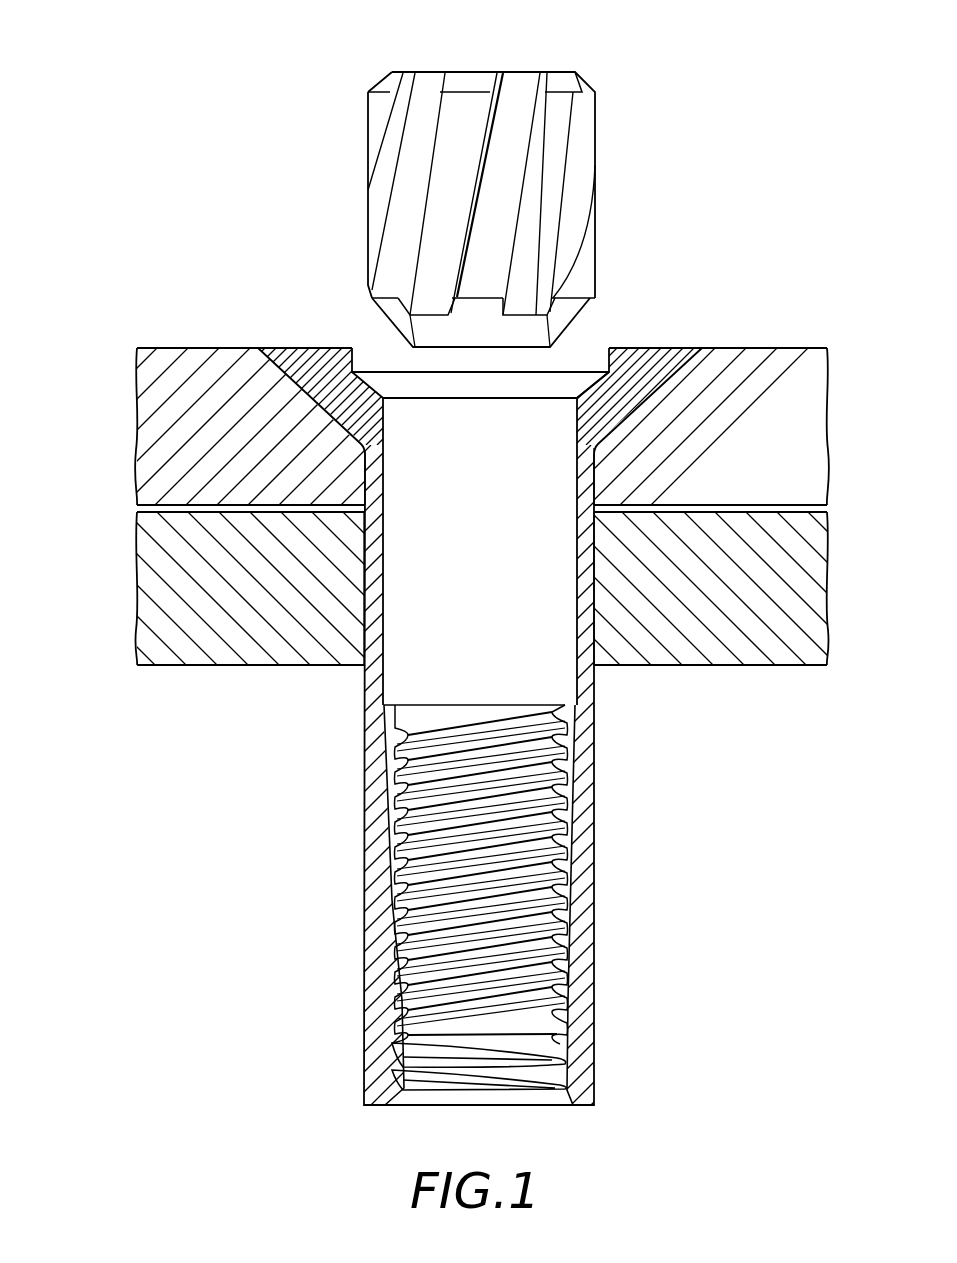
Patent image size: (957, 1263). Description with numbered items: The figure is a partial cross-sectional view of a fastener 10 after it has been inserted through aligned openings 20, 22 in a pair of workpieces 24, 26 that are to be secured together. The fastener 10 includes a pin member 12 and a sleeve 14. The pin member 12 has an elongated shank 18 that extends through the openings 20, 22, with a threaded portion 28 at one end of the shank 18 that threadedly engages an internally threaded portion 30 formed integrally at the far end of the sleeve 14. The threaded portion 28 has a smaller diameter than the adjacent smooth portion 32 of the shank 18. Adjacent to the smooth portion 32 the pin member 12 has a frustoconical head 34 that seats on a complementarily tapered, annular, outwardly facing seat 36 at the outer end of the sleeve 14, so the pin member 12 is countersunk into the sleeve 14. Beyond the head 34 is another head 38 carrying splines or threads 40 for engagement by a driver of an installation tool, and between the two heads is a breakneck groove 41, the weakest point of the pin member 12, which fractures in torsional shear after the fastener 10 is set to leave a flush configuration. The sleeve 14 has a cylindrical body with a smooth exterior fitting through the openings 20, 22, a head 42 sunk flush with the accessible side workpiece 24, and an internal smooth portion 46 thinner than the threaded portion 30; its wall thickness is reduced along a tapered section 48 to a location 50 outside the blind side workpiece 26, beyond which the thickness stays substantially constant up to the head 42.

The fastener 10 is at (674, 260).
The pin member 12 is at (596, 590).
The sleeve 14 is at (595, 888).
The elongated shank 18 is at (383, 696).
The opening 20 is at (595, 478).
The opening 22 is at (597, 565).
The workpiece 24 is at (140, 400).
The workpiece 26 is at (140, 572).
The threaded portion 28 is at (393, 862).
The internally threaded portion 30 is at (565, 1060).
The smooth portion 32 is at (490, 552).
The head 34 is at (383, 380).
The seat 36 is at (600, 380).
The head 38 is at (368, 156).
The splines or threads 40 is at (514, 72).
The breakneck groove 41 is at (558, 345).
The head 42 is at (278, 347).
The internal smooth portion 46 is at (575, 790).
The tapered section 48 is at (577, 806).
The location 50 is at (573, 722).